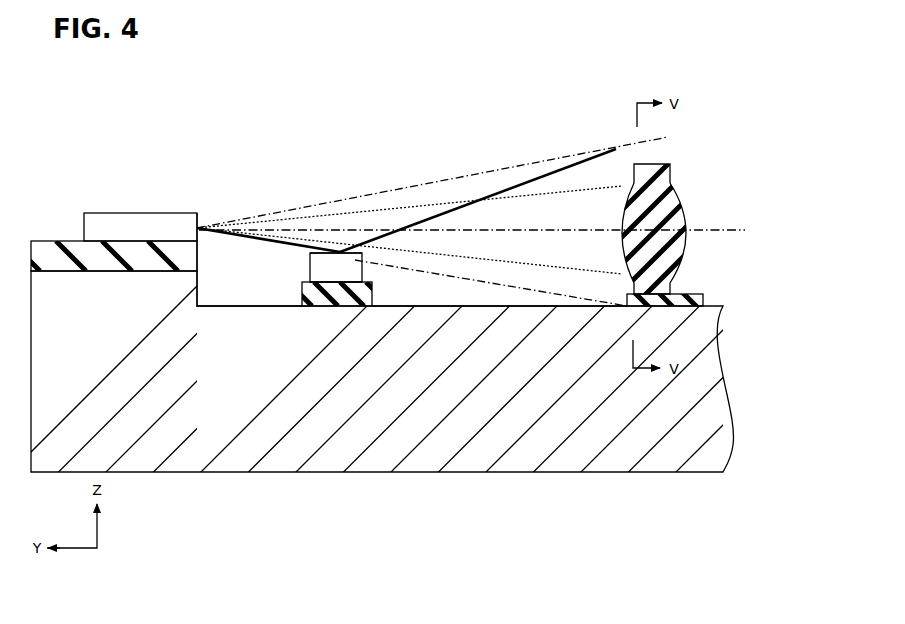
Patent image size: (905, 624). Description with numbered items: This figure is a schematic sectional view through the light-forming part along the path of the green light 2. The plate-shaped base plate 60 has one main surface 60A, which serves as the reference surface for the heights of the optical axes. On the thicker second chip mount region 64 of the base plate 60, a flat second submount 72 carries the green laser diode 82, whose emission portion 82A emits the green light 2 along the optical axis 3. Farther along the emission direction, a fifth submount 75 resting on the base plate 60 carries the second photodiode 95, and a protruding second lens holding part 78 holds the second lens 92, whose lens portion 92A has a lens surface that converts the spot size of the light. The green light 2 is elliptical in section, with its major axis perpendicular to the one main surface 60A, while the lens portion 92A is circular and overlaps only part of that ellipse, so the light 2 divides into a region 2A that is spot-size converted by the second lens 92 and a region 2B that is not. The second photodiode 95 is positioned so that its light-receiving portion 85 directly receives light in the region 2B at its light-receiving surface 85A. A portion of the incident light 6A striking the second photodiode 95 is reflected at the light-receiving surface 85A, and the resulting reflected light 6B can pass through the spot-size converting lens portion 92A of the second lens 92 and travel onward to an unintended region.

The green light 2 is at (423, 150).
The region subjected to spot-size conversion 2A is at (367, 222).
The region not subjected to spot-size conversion 2B is at (406, 196).
The optical axis 3 is at (326, 228).
The incident light 6A is at (276, 251).
The reflected light 6B is at (542, 172).
The base plate 60 is at (475, 430).
The one main surface 60A is at (203, 296).
The second chip mount region 64 is at (72, 295).
The second submount 72 is at (43, 258).
The fifth submount 75 is at (323, 273).
The second lens holding part 78 is at (626, 307).
The green laser diode 82 is at (140, 228).
The emission portion 82A is at (203, 222).
The light-receiving portion 85 is at (362, 258).
The light-receiving surface 85A is at (374, 249).
The second lens 92 is at (660, 164).
The lens portion 92A is at (684, 210).
The second photodiode 95 is at (314, 290).